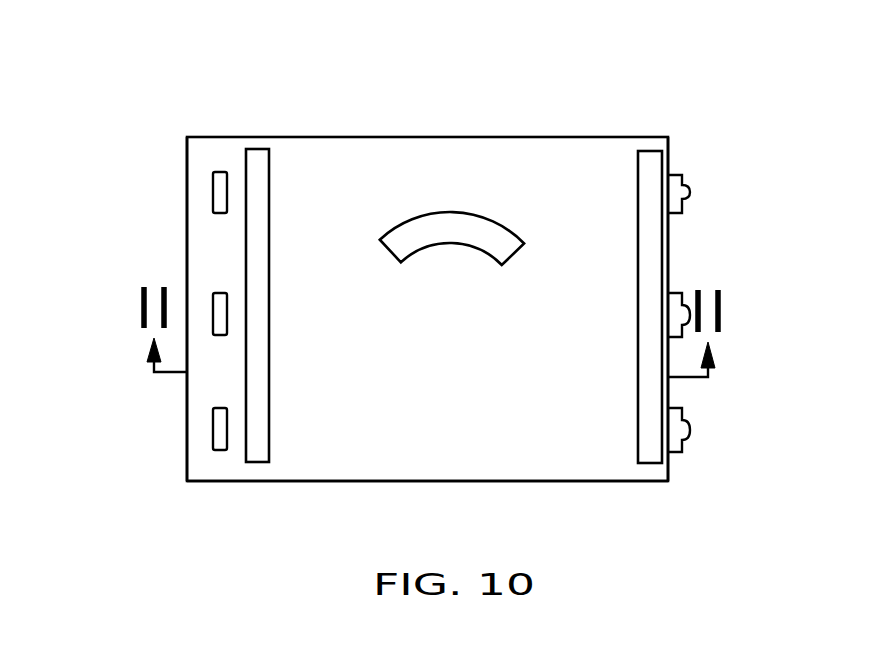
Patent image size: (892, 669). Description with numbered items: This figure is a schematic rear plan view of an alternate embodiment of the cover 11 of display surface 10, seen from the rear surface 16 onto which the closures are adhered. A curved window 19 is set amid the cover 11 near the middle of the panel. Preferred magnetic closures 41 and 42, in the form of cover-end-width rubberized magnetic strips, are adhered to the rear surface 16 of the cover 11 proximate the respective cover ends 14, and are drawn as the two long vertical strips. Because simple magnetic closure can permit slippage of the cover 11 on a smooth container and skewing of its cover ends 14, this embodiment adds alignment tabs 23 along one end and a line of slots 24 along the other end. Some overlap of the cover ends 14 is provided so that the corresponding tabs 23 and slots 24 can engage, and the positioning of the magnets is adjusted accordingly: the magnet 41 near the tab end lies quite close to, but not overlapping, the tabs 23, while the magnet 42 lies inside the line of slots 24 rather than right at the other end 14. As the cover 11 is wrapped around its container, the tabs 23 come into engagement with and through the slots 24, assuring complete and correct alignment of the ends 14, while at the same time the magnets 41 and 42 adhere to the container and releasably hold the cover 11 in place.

The display surface 10 is at (400, 106).
The cover 11 is at (558, 137).
The cover ends 14 is at (187, 240).
The rear surface 16 is at (585, 450).
The curved window 19 is at (453, 243).
The alignment tabs 23 is at (689, 192).
The slots 24 is at (220, 172).
The magnetic closure 41 is at (638, 198).
The magnetic closure 42 is at (270, 194).